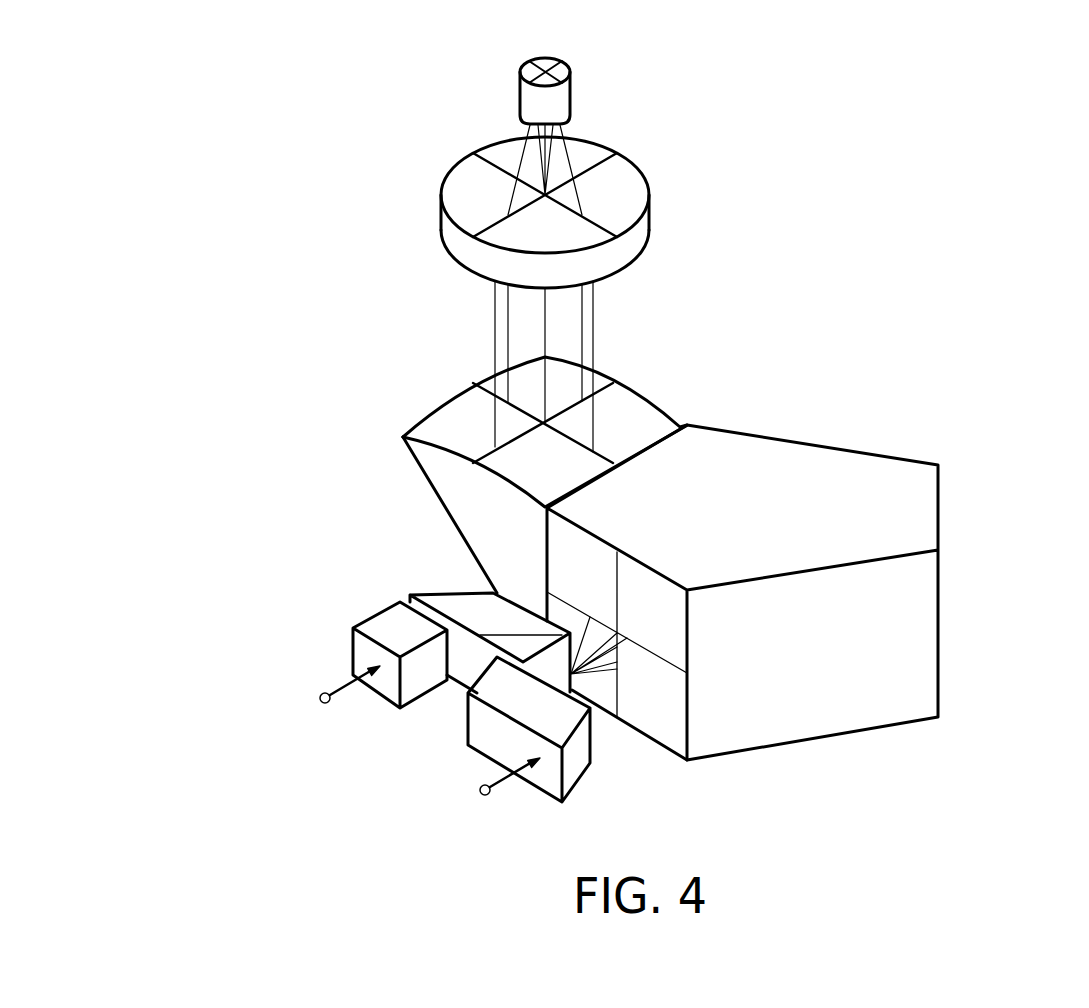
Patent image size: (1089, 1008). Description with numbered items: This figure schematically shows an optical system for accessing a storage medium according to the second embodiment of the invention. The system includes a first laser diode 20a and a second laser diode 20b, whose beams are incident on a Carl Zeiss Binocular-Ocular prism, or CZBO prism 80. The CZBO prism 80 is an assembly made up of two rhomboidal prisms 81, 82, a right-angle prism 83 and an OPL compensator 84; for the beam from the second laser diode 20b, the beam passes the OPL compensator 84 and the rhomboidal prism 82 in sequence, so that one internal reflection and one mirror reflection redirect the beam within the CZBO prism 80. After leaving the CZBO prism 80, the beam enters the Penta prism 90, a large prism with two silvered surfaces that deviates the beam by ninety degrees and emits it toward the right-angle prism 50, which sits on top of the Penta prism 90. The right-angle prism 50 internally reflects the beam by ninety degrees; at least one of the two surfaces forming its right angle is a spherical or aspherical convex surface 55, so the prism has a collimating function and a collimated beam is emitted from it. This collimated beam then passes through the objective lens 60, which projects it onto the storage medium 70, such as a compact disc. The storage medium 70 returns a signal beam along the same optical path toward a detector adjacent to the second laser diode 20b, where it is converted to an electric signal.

The storage medium 70 is at (562, 70).
The objective lens 60 is at (628, 188).
The convex surface 55 is at (442, 413).
The right-angle prism 50 is at (508, 437).
The Penta prism 90 is at (954, 637).
The Carl Zeiss Binocular-Ocular prism 80 is at (385, 597).
The rhomboidal prism 82 is at (474, 600).
The right-angle prism 83 is at (557, 670).
The OPL compensator 84 is at (380, 627).
The rhomboidal prism 81 is at (480, 730).
The first laser diode 20a is at (482, 786).
The second laser diode 20b is at (323, 693).